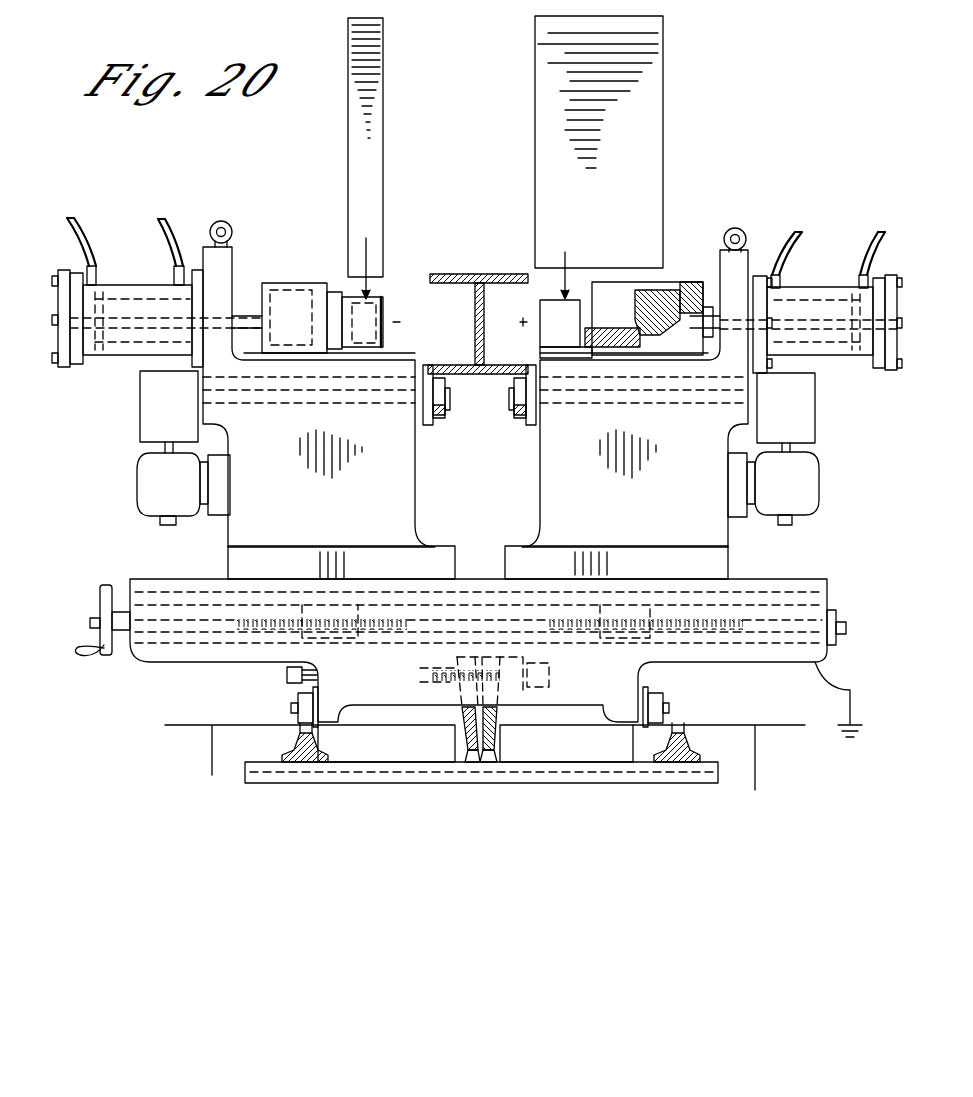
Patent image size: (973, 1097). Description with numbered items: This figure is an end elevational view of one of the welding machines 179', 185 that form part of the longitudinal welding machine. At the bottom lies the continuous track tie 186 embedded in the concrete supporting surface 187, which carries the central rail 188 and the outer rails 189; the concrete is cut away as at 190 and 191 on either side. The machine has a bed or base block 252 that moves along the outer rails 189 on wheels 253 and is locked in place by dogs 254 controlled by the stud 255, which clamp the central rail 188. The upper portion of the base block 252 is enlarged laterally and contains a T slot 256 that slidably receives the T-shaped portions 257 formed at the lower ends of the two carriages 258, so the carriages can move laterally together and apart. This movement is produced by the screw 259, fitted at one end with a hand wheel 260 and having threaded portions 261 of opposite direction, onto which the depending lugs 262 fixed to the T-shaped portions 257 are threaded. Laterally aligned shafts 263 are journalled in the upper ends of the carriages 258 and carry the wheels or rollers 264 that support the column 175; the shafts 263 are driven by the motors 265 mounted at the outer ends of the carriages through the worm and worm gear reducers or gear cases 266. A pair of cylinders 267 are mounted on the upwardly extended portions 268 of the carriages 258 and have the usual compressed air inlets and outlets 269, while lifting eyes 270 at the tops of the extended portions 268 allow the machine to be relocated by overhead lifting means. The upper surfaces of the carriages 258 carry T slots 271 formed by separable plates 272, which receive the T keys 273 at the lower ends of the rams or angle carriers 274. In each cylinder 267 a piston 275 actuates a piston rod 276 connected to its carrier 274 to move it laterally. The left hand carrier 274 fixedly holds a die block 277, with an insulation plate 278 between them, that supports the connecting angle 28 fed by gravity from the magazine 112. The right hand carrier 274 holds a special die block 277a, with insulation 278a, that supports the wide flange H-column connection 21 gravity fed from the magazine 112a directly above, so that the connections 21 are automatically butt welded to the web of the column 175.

The wide flange H-column connection 21 is at (620, 290).
The connecting angle 28 is at (395, 276).
The magazine 112 is at (384, 186).
The magazine 112a is at (537, 190).
The column 175 is at (495, 274).
The welding machine 179' is at (766, 83).
The welding machine 185 is at (683, 118).
The continuous track tie 186 is at (540, 783).
The concrete supporting surface 187 is at (735, 736).
The central rail 188 is at (482, 742).
The outer rails 189 is at (288, 748).
The cut away 190 is at (345, 736).
The cut away 191 is at (500, 754).
The bed or base block 252 is at (640, 680).
The wheels 253 is at (292, 700).
The dogs 254 is at (480, 762).
The stud 255 is at (425, 684).
The T slot 256 is at (795, 593).
The T-shaped portions 257 is at (245, 598).
The carriages 258 is at (288, 479).
The screw 259 is at (185, 640).
The hand wheel 260 is at (97, 600).
The threaded portions 261 is at (395, 615).
The depending lugs 262 is at (325, 620).
The shafts 263 is at (305, 398).
The wheels or rollers 264 is at (430, 425).
The motors 265 is at (145, 488).
The worm and worm gear reducers or gear cases 266 is at (150, 432).
The cylinders 267 is at (118, 290).
The upwardly extended portions 268 is at (235, 246).
The compressed air inlets and outlets 269 is at (86, 232).
The lifting eyes 270 is at (225, 221).
The T slots 271 is at (395, 368).
The separable plates 272 is at (415, 360).
The T keys 273 is at (290, 373).
The rams or angle carriers 274 is at (692, 290).
The piston 275 is at (99, 360).
The piston rod 276 is at (238, 305).
The die block 277 is at (355, 296).
The special die block 277a is at (640, 300).
The insulation plate 278 is at (330, 284).
The insulation 278a is at (612, 300).